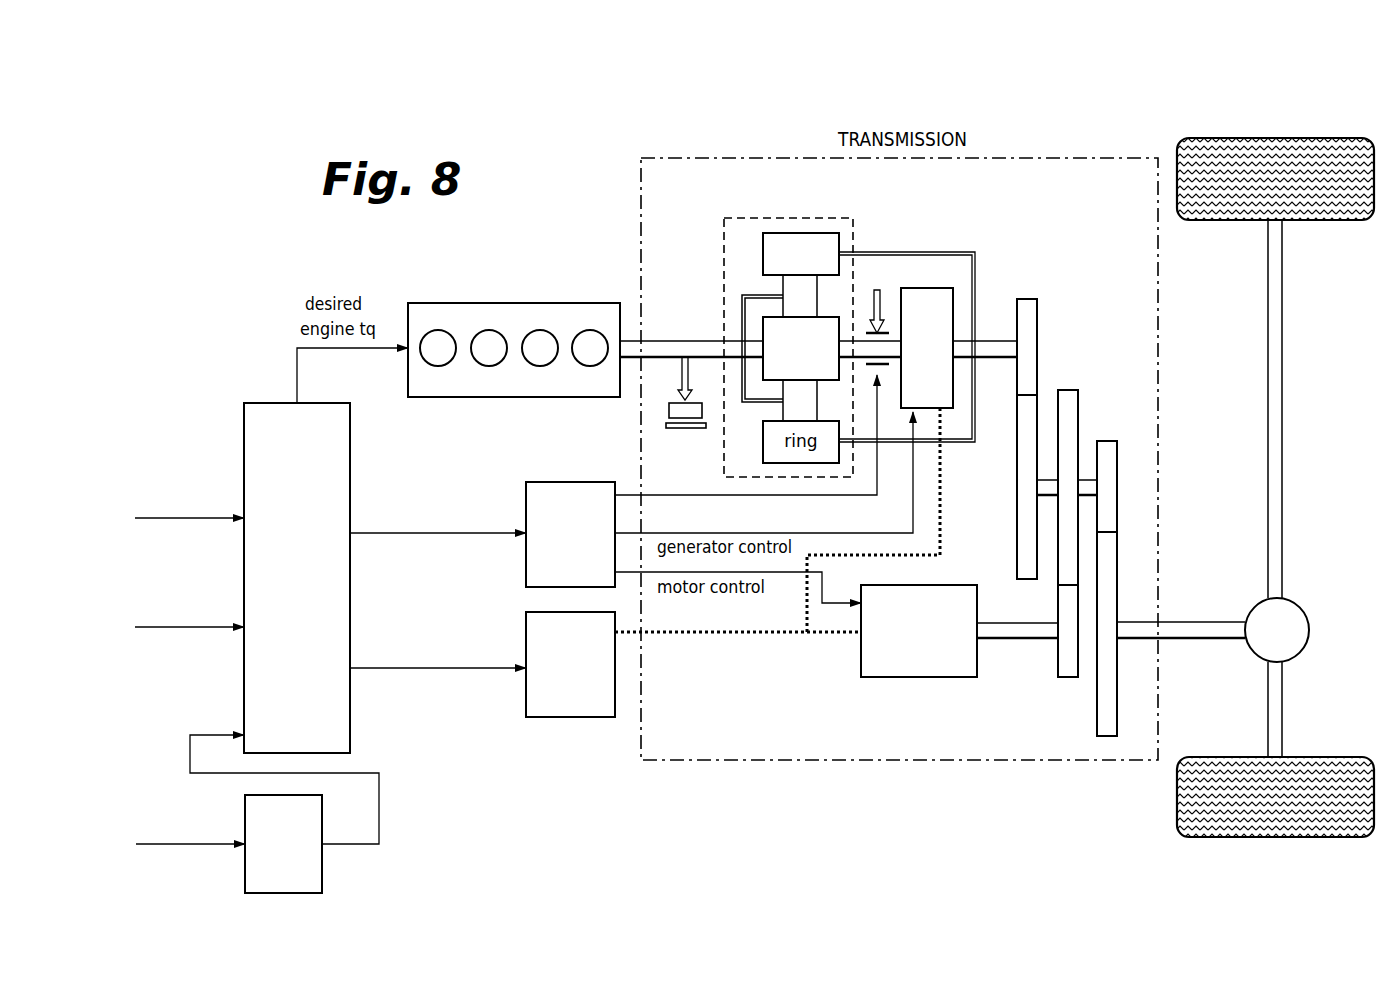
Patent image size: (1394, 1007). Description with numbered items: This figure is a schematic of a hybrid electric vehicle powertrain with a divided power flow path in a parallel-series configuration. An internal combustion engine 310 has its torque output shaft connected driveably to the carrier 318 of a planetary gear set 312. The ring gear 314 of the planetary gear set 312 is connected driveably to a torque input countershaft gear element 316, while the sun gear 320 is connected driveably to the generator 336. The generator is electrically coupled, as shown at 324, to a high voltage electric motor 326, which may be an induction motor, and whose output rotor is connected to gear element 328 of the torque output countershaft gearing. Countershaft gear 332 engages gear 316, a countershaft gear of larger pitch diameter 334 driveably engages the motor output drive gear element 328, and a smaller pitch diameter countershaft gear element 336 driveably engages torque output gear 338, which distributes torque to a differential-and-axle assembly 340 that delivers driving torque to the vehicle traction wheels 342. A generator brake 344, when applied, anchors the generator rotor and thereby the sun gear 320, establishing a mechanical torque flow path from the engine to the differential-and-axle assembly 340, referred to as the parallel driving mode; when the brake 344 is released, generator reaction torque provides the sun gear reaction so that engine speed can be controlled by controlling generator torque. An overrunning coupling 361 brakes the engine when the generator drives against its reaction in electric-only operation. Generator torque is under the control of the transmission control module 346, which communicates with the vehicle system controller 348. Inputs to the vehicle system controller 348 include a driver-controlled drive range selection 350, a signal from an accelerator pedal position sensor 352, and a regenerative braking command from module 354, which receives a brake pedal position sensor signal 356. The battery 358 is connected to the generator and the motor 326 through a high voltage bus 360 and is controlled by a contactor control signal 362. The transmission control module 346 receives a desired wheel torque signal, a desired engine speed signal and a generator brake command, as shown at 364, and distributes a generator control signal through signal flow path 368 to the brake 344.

The internal combustion engine 310 is at (452, 303).
The planetary gear set 312 is at (840, 212).
The ring gear 314 is at (763, 250).
The torque input countershaft gear element 316 is at (1037, 330).
The carrier 318 is at (742, 298).
The sun gear 320 is at (770, 380).
The electrical coupling 324 is at (942, 500).
The high voltage electric motor 326 is at (925, 678).
The motor output drive gear element 328 is at (1058, 655).
The countershaft gear 332 is at (1017, 537).
The countershaft gear of larger pitch diameter 334 is at (1078, 410).
The generator / smaller pitch diameter countershaft gear element 336 is at (975, 290).
The torque output gear 338 is at (1097, 700).
The differential-and-axle assembly 340 is at (1242, 606).
The vehicle traction wheels 342 is at (1300, 138).
The generator brake 344 is at (882, 330).
The transmission control module 346 is at (563, 482).
The vehicle system controller 348 is at (244, 422).
The driver-controlled drive range selection 350 is at (182, 520).
The accelerator pedal position sensor 352 is at (182, 629).
The regenerative braking module 354 is at (272, 895).
The brake pedal position sensor signal 356 is at (182, 846).
The battery 358 is at (568, 718).
The high voltage bus 360 is at (762, 630).
The overrunning coupling 361 is at (669, 412).
The contactor control signal 362 is at (425, 670).
The desired wheel torque, desired engine speed and generator brake command signals 364 is at (425, 535).
The signal flow path 368 is at (710, 495).